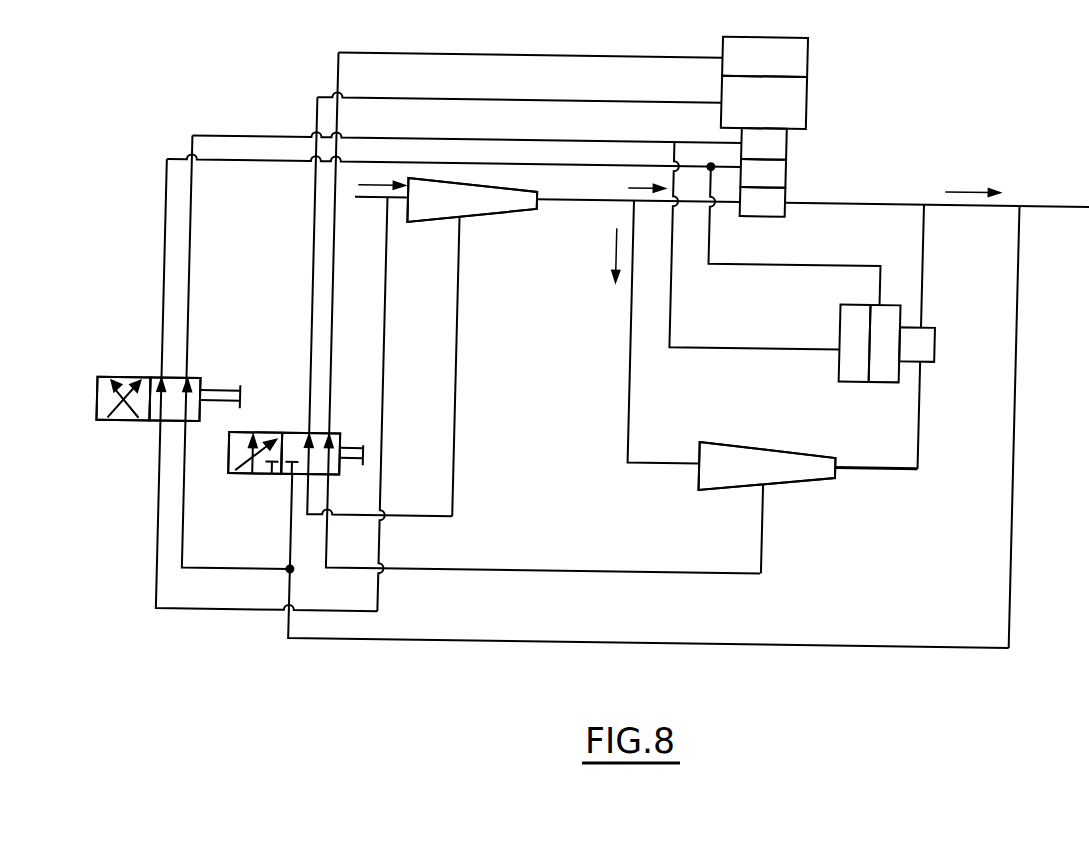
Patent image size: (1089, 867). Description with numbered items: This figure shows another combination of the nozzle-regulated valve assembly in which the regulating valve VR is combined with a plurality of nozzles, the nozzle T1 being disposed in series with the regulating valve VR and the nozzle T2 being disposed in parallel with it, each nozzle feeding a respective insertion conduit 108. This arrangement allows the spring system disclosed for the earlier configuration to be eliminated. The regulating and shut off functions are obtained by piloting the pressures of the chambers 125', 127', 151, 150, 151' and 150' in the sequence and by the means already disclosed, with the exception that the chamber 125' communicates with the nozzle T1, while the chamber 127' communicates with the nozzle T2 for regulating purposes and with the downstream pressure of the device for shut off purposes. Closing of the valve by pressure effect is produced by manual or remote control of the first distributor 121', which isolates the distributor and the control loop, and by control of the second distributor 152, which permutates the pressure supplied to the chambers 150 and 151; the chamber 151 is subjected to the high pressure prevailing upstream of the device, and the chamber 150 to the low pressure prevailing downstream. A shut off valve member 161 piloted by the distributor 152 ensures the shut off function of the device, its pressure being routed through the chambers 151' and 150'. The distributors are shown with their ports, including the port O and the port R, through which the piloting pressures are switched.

The chamber 127' is at (765, 57).
The chamber 125' is at (764, 102).
The chamber 151 is at (764, 144).
The chamber 150 is at (763, 173).
The regulating valve VR is at (768, 197).
The nozzle T1 is at (498, 199).
The nozzle T2 is at (791, 460).
The insertion conduit 108 is at (462, 223).
The chamber 151' is at (828, 358).
The chamber 150' is at (892, 366).
The shut off valve member 161 is at (921, 336).
The second distributor 152 is at (228, 393).
The first distributor 121' is at (302, 429).
The outlet port O is at (199, 386).
The return port R is at (316, 455).